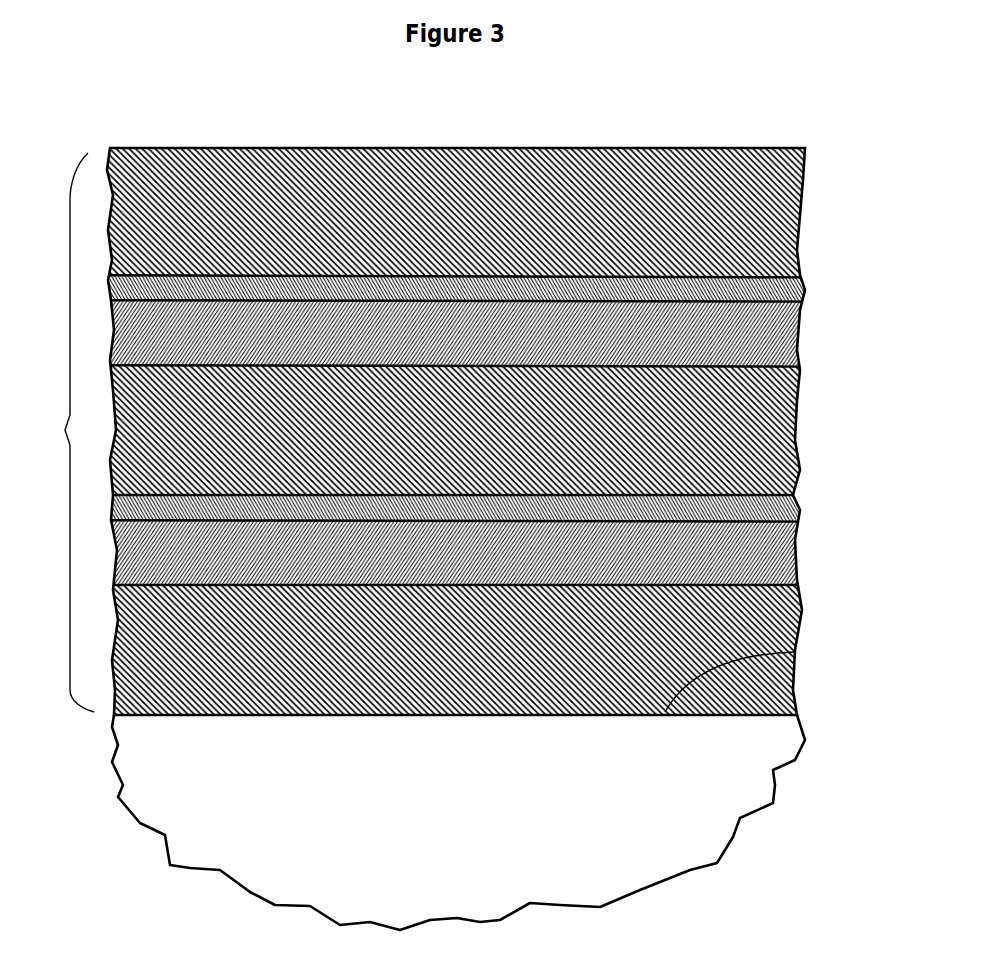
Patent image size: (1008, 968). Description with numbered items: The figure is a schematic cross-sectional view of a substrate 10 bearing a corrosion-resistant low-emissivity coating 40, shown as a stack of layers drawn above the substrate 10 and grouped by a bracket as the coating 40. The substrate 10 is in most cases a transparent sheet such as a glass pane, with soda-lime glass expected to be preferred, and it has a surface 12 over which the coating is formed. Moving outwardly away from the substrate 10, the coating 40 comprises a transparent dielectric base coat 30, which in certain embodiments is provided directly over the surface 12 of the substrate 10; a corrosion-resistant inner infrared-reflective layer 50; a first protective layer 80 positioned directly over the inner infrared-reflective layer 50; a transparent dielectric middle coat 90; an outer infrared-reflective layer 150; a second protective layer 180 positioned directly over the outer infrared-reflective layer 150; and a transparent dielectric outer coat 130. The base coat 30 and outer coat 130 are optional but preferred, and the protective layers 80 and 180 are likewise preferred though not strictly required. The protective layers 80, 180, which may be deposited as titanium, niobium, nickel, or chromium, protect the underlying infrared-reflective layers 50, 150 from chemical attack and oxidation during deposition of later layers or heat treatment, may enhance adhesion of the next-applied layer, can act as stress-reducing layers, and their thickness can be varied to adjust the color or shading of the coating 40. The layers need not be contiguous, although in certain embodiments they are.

The substrate 10 is at (438, 816).
The surface of the substrate 12 is at (795, 652).
The transparent dielectric base coat 30 is at (436, 654).
The corrosion-resistant low-emissivity coating 40 is at (64, 432).
The corrosion-resistant inner infrared-reflective layer 50 is at (436, 568).
The first protective layer 80 is at (795, 497).
The transparent dielectric middle coat 90 is at (436, 440).
The transparent dielectric outer coat 130 is at (433, 216).
The outer infrared-reflective layer 150 is at (433, 336).
The second protective layer 180 is at (797, 284).